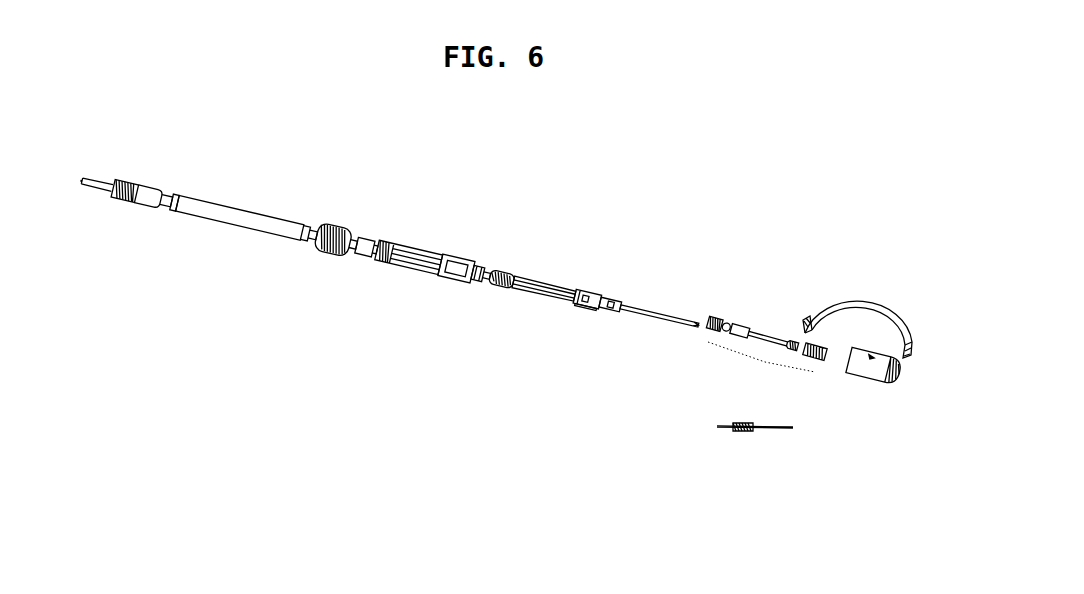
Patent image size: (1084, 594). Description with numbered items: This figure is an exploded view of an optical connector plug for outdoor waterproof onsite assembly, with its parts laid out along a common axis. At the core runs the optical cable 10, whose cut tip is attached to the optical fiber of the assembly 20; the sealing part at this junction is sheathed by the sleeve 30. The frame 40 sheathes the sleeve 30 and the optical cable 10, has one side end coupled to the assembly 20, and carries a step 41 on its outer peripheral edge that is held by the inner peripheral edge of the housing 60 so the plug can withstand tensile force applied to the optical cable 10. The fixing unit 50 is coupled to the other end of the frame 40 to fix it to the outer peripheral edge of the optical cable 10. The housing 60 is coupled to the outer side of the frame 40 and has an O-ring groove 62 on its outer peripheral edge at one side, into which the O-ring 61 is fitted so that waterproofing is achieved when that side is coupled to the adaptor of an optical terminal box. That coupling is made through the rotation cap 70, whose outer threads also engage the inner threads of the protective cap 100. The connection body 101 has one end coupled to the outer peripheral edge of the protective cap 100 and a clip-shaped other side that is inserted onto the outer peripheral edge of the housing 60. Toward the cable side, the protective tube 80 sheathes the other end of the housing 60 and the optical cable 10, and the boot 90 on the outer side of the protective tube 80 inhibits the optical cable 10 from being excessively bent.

The optical cable 10 is at (613, 307).
The assembly 20 is at (768, 362).
The sleeve 30 is at (680, 313).
The frame 40 is at (583, 310).
The step 41 is at (580, 287).
The fixing unit 50 is at (497, 273).
The housing 60 is at (405, 243).
The O-ring 61 is at (477, 270).
The O-ring groove 62 is at (440, 260).
The rotation cap 70 is at (323, 223).
The protective tube 80 is at (242, 212).
The boot 90 is at (147, 188).
The protective cap 100 is at (868, 385).
The connection body 101 is at (860, 307).